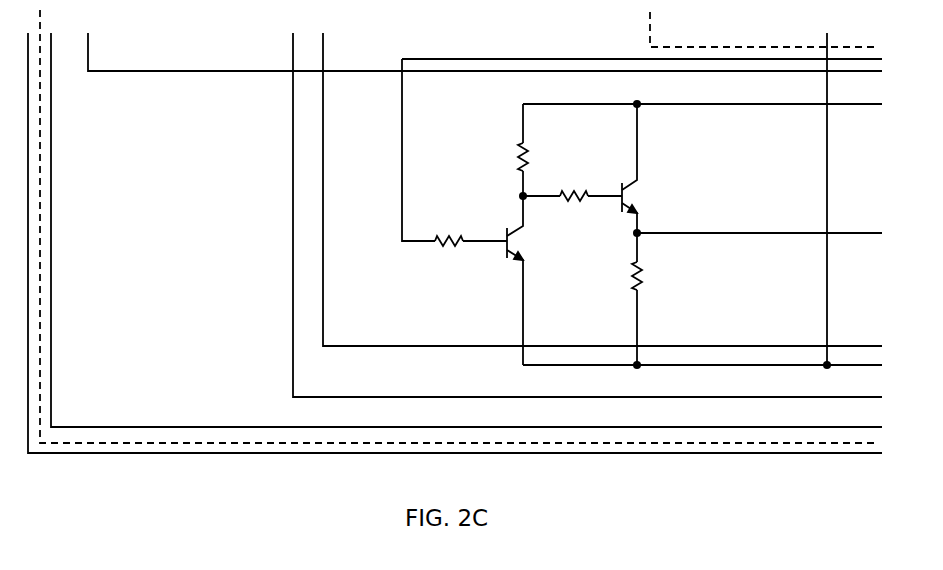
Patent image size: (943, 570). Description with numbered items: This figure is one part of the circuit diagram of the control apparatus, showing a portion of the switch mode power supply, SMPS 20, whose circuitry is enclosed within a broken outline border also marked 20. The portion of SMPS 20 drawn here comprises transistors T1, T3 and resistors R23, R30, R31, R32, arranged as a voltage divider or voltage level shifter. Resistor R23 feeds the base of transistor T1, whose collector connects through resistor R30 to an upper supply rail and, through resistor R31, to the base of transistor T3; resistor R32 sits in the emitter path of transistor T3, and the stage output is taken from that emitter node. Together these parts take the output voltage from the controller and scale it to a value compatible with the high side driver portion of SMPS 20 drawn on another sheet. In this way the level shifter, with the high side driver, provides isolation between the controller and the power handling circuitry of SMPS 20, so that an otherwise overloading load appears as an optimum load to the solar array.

The SMPS 20 is at (283, 442).
The resistor R23 is at (454, 152).
The resistor R30 is at (502, 150).
The resistor R31 is at (572, 185).
The resistor R32 is at (656, 299).
The transistor T1 is at (528, 280).
The transistor T3 is at (641, 168).